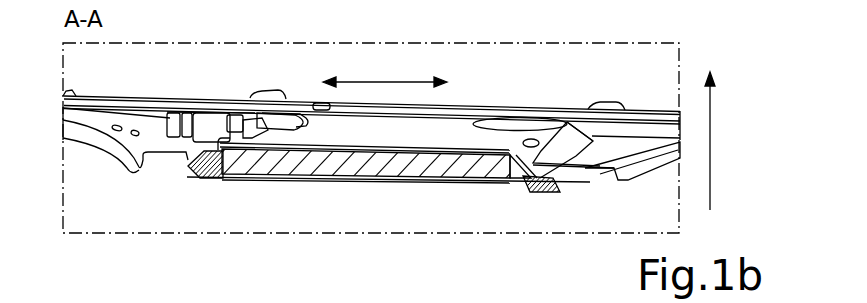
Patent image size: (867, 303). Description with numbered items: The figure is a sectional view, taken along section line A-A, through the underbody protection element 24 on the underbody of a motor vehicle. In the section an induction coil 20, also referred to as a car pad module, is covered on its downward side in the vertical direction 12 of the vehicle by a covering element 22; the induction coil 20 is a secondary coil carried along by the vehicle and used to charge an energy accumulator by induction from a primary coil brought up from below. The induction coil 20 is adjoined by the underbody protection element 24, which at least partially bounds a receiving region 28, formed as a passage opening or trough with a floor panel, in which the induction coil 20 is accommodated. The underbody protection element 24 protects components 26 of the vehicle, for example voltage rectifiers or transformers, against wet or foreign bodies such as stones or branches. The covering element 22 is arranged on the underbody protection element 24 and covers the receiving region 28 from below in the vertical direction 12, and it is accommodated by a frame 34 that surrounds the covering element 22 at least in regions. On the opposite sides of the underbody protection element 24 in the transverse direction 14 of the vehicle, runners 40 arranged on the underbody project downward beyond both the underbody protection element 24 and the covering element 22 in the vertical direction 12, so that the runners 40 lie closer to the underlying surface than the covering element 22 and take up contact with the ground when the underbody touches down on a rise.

The vertical direction of the vehicle 12 is at (710, 142).
The transverse direction of the vehicle 14 is at (392, 80).
The induction coil 20 is at (297, 178).
The covering element 22 is at (343, 182).
The underbody protection element 24 is at (619, 147).
The components 26 is at (203, 127).
The receiving region 28 is at (460, 122).
The frame 34 is at (519, 190).
The runners 40 is at (186, 178).